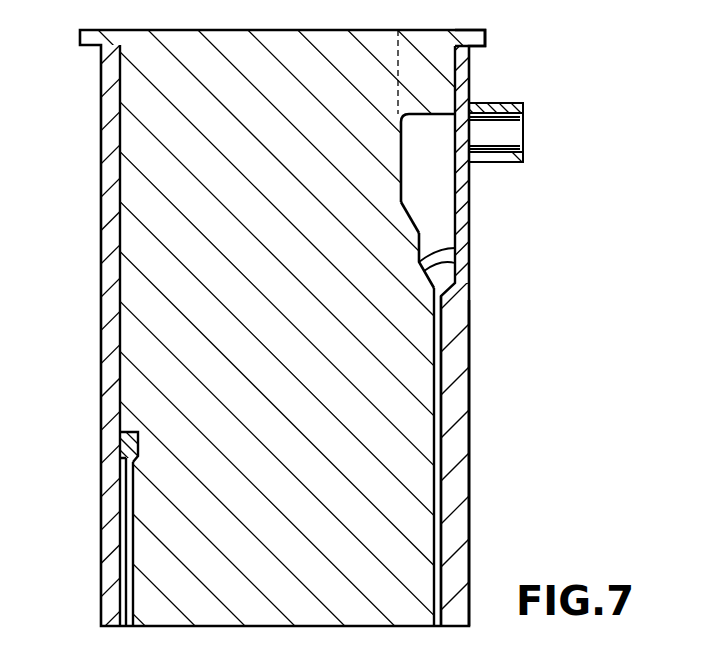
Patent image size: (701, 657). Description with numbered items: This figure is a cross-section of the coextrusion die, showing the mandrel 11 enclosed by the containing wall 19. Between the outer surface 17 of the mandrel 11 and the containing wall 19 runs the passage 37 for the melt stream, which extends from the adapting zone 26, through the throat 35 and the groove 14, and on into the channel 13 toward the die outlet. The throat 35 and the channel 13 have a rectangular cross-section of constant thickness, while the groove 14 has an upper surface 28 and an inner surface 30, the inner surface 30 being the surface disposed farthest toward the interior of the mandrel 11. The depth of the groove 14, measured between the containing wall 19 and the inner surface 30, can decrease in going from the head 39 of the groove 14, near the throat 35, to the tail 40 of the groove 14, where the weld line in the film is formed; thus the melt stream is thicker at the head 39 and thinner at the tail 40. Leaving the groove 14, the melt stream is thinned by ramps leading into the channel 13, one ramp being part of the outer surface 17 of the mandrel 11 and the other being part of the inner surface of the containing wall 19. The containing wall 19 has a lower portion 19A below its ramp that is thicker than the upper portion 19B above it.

The mandrel 11 is at (420, 378).
The channel 13 is at (440, 494).
The groove 14 is at (442, 242).
The outer surface of mandrel 17 is at (118, 374).
The containing wall 19 is at (462, 331).
The lower portion of containing wall 19A is at (471, 421).
The upper portion of containing wall 19B is at (469, 74).
The adapting zone 26 is at (438, 132).
The upper surface of groove 28 is at (126, 446).
The inner surface of groove 30 is at (448, 262).
The throat 35 is at (427, 213).
The passage 37 is at (442, 195).
The head of groove 39 is at (437, 276).
The tail of groove 40 is at (120, 447).